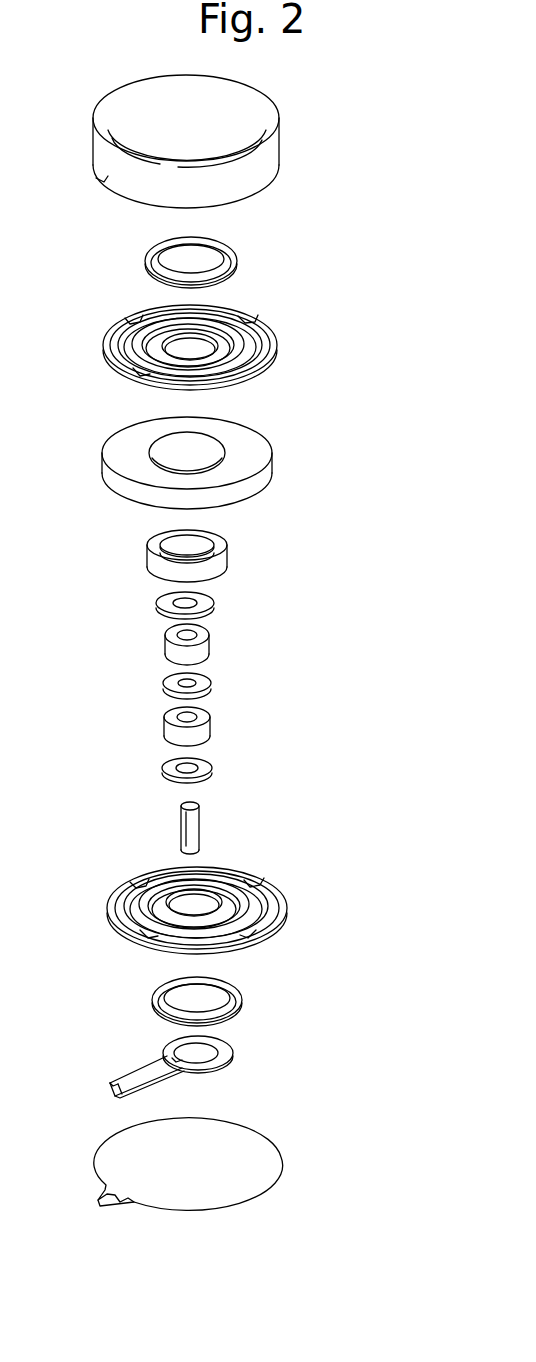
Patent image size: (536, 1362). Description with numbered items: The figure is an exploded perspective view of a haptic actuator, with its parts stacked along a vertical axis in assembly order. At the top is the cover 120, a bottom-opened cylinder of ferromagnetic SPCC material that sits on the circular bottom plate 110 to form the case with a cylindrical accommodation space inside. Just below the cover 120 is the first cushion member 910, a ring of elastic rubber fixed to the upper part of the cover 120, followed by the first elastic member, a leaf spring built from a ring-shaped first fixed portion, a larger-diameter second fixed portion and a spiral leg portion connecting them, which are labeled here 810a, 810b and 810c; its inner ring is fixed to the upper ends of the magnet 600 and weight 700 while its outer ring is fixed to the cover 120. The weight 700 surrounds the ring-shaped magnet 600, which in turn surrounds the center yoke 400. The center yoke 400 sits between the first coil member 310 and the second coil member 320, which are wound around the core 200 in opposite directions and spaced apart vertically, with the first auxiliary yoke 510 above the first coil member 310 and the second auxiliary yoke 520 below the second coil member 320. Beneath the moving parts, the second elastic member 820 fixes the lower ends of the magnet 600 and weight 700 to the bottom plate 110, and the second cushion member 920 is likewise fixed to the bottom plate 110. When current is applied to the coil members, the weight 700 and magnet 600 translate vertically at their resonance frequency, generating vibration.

The cover 120 is at (272, 164).
The first cushion member 910 is at (237, 255).
The outer ring portion of upper support plate 810a is at (262, 372).
The middle ring portion of upper support plate 810b is at (252, 320).
The inner ring portion of upper support plate 810c is at (270, 350).
The weight 700 is at (244, 466).
The magnet 600 is at (227, 552).
The first auxiliary yoke 510 is at (214, 600).
The first coil member 310 is at (209, 645).
The center yoke 400 is at (211, 685).
The second coil member 320 is at (210, 726).
The second auxiliary yoke 520 is at (212, 768).
The core 200 is at (199, 828).
The second elastic member 820 is at (282, 898).
The second cushion member 920 is at (242, 1004).
The bottom plate 110 is at (252, 1160).